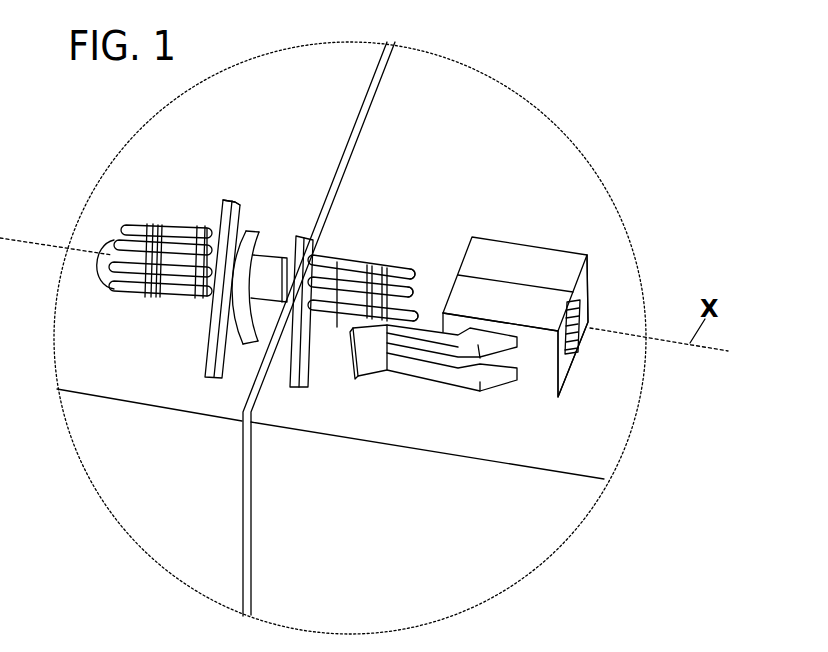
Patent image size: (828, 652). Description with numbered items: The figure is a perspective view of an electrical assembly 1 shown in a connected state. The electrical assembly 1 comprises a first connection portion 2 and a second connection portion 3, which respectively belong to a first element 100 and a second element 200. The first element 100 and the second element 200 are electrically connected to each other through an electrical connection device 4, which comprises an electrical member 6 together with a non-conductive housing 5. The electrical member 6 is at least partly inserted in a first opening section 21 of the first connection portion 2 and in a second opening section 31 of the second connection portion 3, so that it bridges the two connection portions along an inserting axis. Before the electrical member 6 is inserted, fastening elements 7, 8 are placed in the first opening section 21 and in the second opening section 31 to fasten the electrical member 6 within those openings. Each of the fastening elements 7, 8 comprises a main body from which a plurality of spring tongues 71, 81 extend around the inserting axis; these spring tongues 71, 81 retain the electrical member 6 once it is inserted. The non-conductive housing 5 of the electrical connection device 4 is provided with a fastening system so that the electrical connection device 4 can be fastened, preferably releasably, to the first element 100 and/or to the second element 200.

The electrical assembly 1 is at (312, 147).
The first element 100 is at (126, 174).
The second element 200 is at (512, 138).
The first connection portion 2 is at (213, 360).
The first opening section 21 is at (254, 222).
The second connection portion 3 is at (290, 388).
The second opening section 31 is at (326, 248).
The electrical connection device 4 is at (563, 388).
The non-conductive housing 5 is at (535, 258).
The electrical member 6 is at (267, 292).
The fastening element 7 is at (170, 300).
The spring tongues 71 is at (127, 284).
The fastening element 8 is at (341, 312).
The spring tongues 81 is at (400, 280).